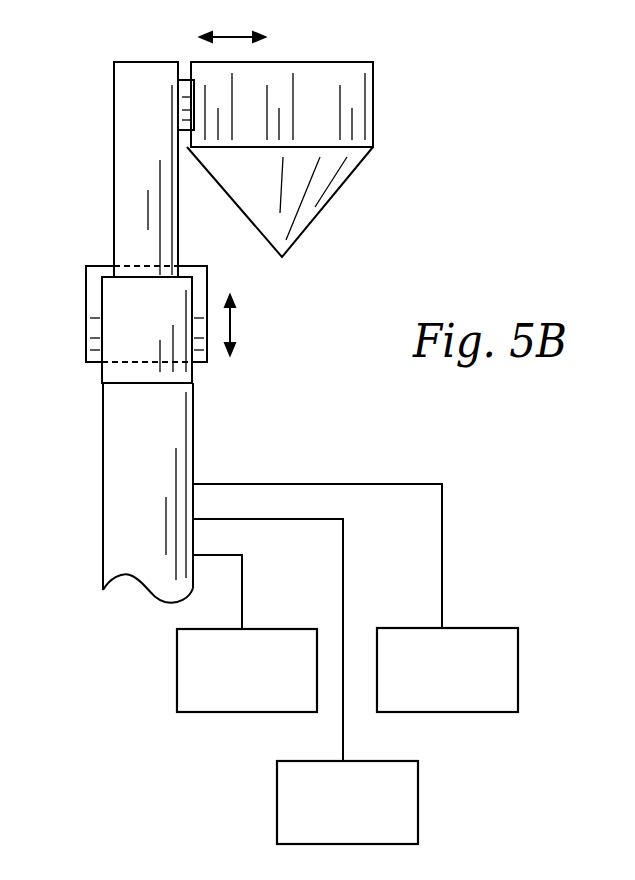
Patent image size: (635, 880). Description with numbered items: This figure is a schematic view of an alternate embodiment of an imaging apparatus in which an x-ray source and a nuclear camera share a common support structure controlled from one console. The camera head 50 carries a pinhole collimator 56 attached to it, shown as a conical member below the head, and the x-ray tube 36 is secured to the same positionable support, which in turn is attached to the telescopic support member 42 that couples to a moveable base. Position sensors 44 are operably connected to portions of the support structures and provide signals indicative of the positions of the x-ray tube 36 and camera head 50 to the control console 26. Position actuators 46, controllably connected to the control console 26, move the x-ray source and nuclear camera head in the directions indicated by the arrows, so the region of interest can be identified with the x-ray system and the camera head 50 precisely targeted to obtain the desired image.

The control console 26 is at (277, 805).
The x-ray tube 36 is at (92, 318).
The telescopic support member 42 is at (112, 487).
The position sensors 44 is at (177, 673).
The position actuators 46 is at (518, 668).
The camera head 50 is at (373, 102).
The pinhole collimator 56 is at (323, 202).